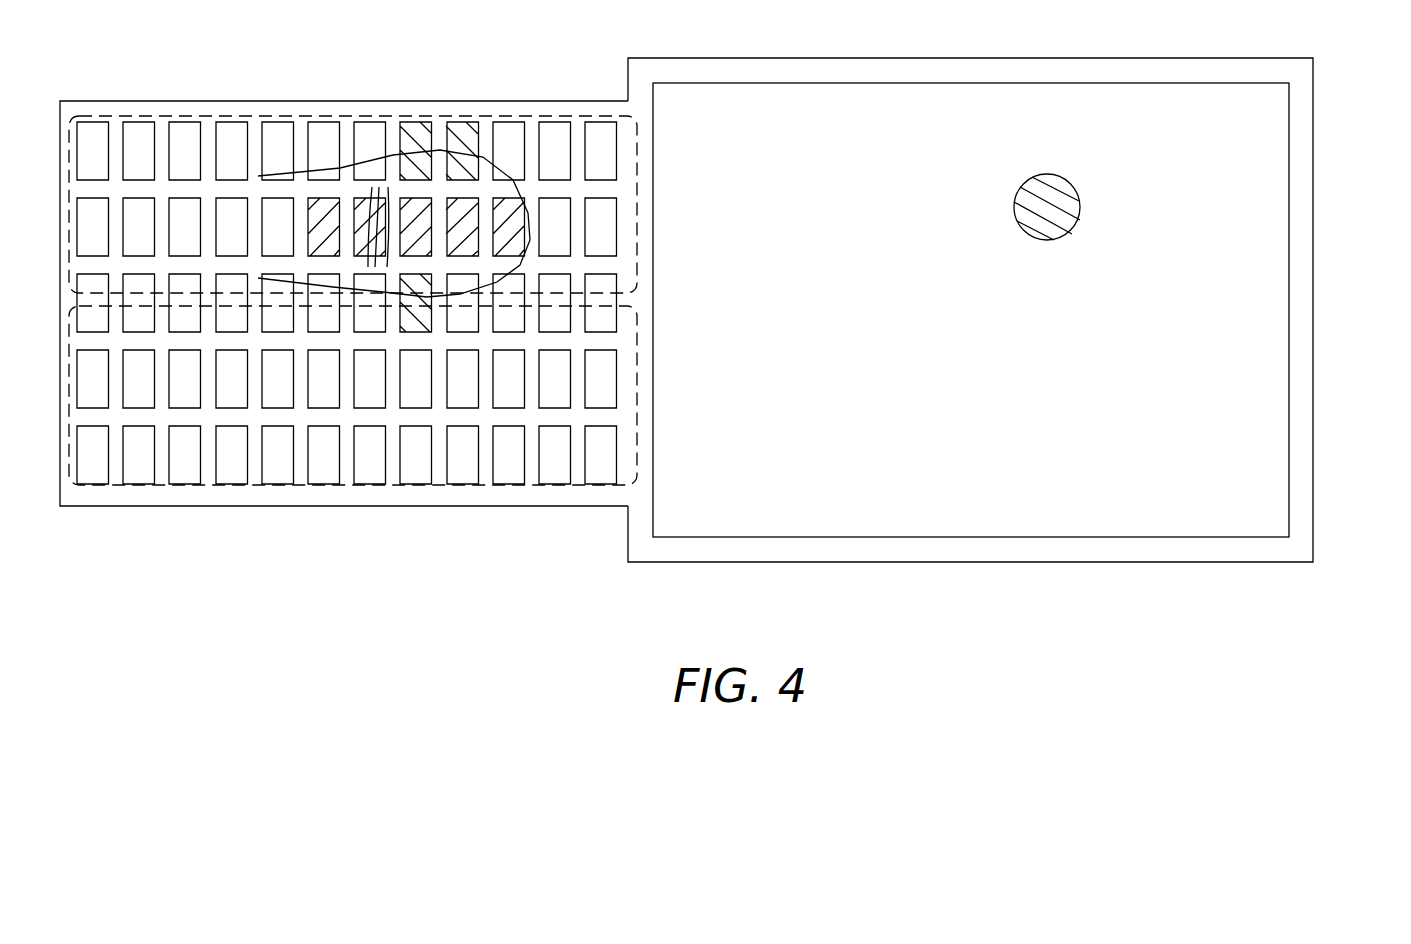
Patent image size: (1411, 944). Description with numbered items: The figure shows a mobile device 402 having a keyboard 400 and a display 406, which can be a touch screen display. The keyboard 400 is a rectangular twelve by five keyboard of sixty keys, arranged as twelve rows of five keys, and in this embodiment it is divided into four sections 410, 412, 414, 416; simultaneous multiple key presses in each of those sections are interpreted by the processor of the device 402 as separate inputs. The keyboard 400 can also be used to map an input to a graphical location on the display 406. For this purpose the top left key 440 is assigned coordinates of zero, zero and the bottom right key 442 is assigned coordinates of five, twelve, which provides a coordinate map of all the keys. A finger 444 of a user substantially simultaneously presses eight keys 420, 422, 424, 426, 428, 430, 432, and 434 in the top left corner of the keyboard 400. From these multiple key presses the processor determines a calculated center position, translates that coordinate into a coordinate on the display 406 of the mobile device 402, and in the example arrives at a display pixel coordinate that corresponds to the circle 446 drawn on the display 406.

The keyboard 400 is at (398, 488).
The mobile device 402 is at (1324, 134).
The display 406 is at (951, 587).
The section 410 is at (637, 205).
The section 412 is at (637, 396).
The section 414 is at (133, 113).
The section 416 is at (162, 485).
The key 420 is at (515, 222).
The key 422 is at (455, 175).
The key 424 is at (470, 222).
The key 426 is at (413, 332).
The key 428 is at (425, 152).
The key 430 is at (407, 200).
The key 432 is at (367, 192).
The key 434 is at (312, 214).
The top left key 440 is at (597, 155).
The bottom right key 442 is at (93, 485).
The finger 444 is at (320, 170).
The circle 446 is at (1010, 160).